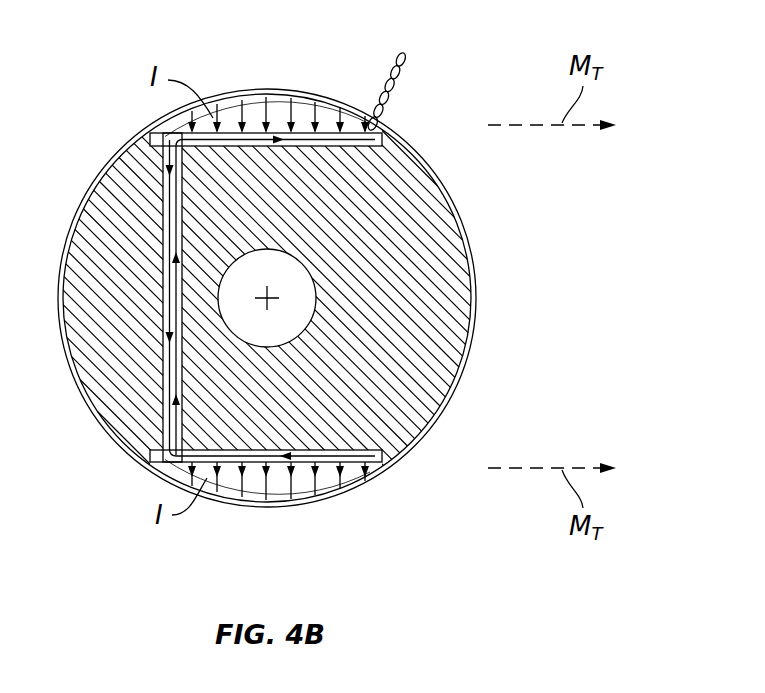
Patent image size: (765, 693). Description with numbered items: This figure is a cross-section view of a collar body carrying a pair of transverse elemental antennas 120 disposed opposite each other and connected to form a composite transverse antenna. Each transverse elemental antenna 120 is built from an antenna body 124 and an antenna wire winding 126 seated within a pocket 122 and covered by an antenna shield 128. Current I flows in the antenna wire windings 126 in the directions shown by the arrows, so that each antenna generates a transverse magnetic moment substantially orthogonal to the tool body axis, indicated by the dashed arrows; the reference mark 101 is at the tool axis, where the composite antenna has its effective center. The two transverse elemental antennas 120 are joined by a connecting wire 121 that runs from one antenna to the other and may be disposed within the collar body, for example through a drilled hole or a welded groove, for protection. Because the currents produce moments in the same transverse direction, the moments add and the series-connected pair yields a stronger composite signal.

The central bore / shaft axis 101 is at (268, 297).
The transverse elemental antenna 120 is at (305, 80).
The wire 121 is at (166, 424).
The pocket 122 is at (375, 150).
The antenna body 124 is at (230, 106).
The antenna wire winding 126 is at (256, 112).
The antenna shield 128 is at (395, 142).